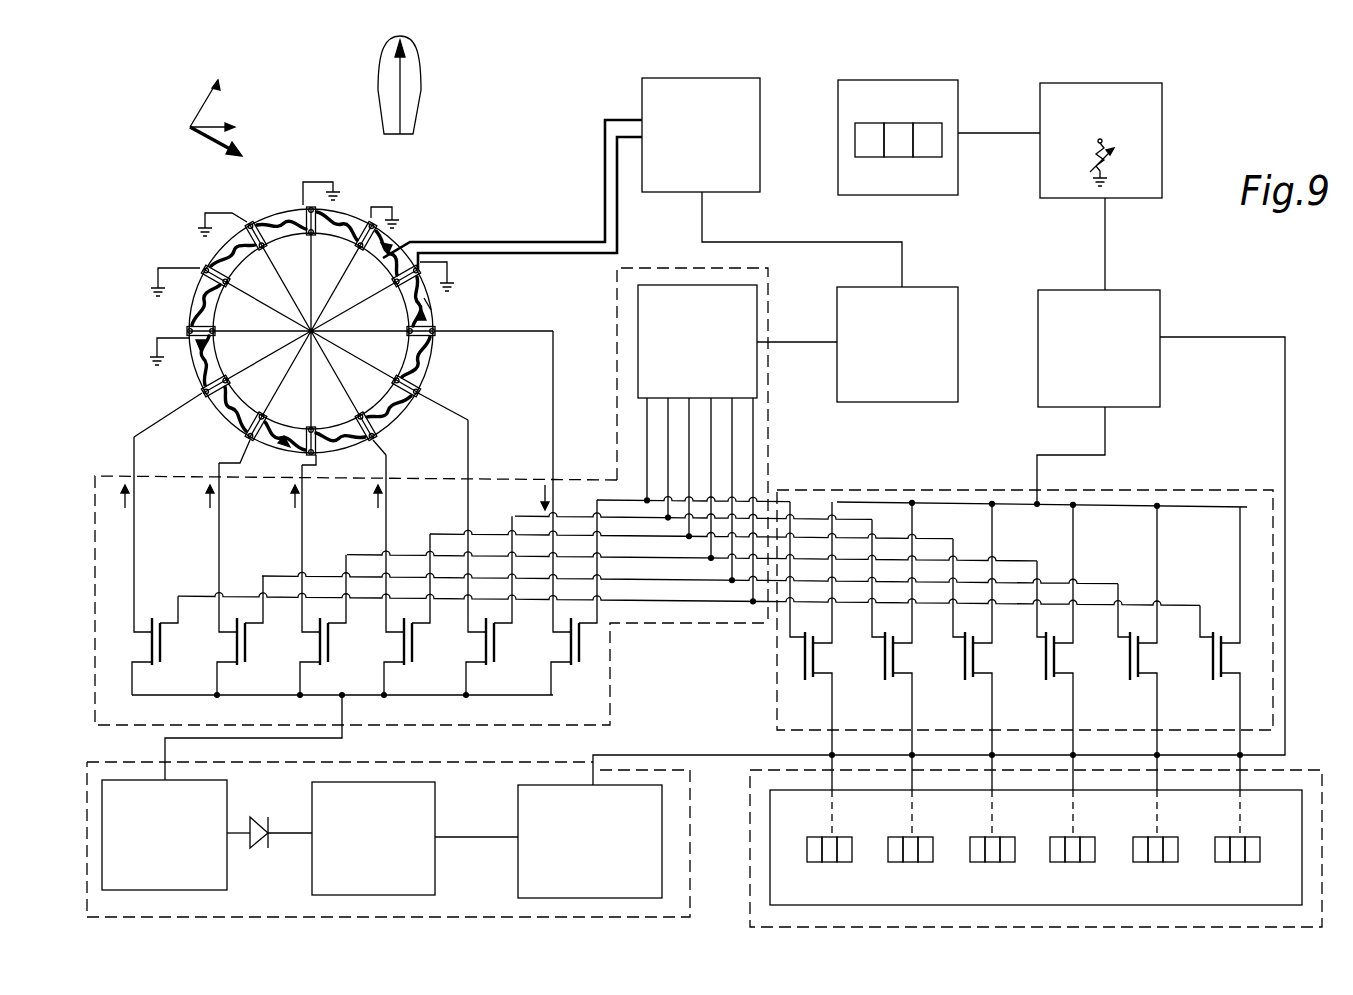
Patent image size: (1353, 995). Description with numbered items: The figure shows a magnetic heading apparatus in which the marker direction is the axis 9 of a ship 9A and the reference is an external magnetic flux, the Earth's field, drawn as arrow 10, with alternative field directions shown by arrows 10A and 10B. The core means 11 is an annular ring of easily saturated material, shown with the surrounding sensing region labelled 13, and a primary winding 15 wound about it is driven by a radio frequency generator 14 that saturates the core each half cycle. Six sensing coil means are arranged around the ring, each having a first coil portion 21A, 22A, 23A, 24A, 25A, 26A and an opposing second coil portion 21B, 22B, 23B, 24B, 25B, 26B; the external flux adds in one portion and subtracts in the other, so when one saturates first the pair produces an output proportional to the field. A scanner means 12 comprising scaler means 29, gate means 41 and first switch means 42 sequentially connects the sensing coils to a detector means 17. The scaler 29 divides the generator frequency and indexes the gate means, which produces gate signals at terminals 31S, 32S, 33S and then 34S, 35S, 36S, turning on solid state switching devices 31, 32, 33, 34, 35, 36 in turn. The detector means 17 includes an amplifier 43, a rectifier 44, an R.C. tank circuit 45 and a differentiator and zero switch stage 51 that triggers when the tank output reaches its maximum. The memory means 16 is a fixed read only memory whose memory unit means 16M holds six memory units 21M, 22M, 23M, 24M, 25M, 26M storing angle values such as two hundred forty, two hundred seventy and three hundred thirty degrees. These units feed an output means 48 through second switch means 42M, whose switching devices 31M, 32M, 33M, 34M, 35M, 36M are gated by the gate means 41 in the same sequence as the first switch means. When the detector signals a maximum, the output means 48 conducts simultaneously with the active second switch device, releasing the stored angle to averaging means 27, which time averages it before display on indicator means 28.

The marker direction axis 9 is at (410, 98).
The ship 9A is at (421, 80).
The external magnetic flux 10 is at (228, 150).
The external magnetic field direction 10A is at (222, 122).
The external magnetic field direction 10B is at (218, 92).
The core means 11 is at (428, 370).
The scanner means 12 is at (585, 478).
The discharge chamber 13 is at (482, 215).
The radio frequency generator 14 is at (752, 80).
The primary winding 15 is at (418, 301).
The memory means 16 is at (717, 704).
The memory unit means 16M is at (1222, 831).
The detector means 17 is at (420, 762).
The first coil portion means 21A is at (436, 333).
The first coil portion means 22A is at (417, 397).
The first coil portion means 23A is at (370, 440).
The first coil portion means 24A is at (310, 452).
The first coil portion means 25A is at (249, 438).
The first coil portion means 26A is at (203, 392).
The second coil portion means 21B is at (190, 331).
The second coil portion means 22B is at (203, 265).
The second coil portion means 23B is at (252, 220).
The second coil portion means 24B is at (322, 212).
The second coil portion means 25B is at (376, 218).
The second coil portion means 26B is at (450, 276).
The memory unit 21M is at (812, 862).
The memory unit 22M is at (893, 862).
The memory unit 23M is at (975, 862).
The memory unit 24M is at (1055, 862).
The memory unit 25M is at (1138, 862).
The memory unit 26M is at (1220, 862).
The averaging means 27 is at (1162, 105).
The indicator means 28 is at (952, 82).
The scaler means 29 is at (935, 287).
The solid state switching device 31 is at (571, 650).
The solid state switching device 32 is at (486, 650).
The solid state switching device 33 is at (404, 647).
The solid state switching device 34 is at (320, 647).
The solid state switching device 35 is at (237, 646).
The solid state switching device 36 is at (152, 645).
The gate signal terminal 31S is at (647, 495).
The gate signal terminal 32S is at (654, 517).
The gate signal 33S is at (658, 535).
The switching line 34S is at (660, 556).
The switching line 35S is at (660, 578).
The switching line 36S is at (660, 600).
The switching device 31M is at (813, 662).
The switching device 32M is at (893, 662).
The switching device 33M is at (973, 662).
The switching device 34M is at (1054, 663).
The switching device 35M is at (1138, 663).
The switching device 36M is at (1221, 663).
The gate means 41 is at (638, 310).
The first switch means 42 is at (354, 528).
The second switch means 42M is at (1130, 562).
The amplifier 43 is at (227, 867).
The rectifier 44 is at (258, 817).
The R.C. tank circuit 45 is at (318, 893).
The output means 48 is at (1130, 290).
The differentiator and zero switch stage 51 is at (662, 815).